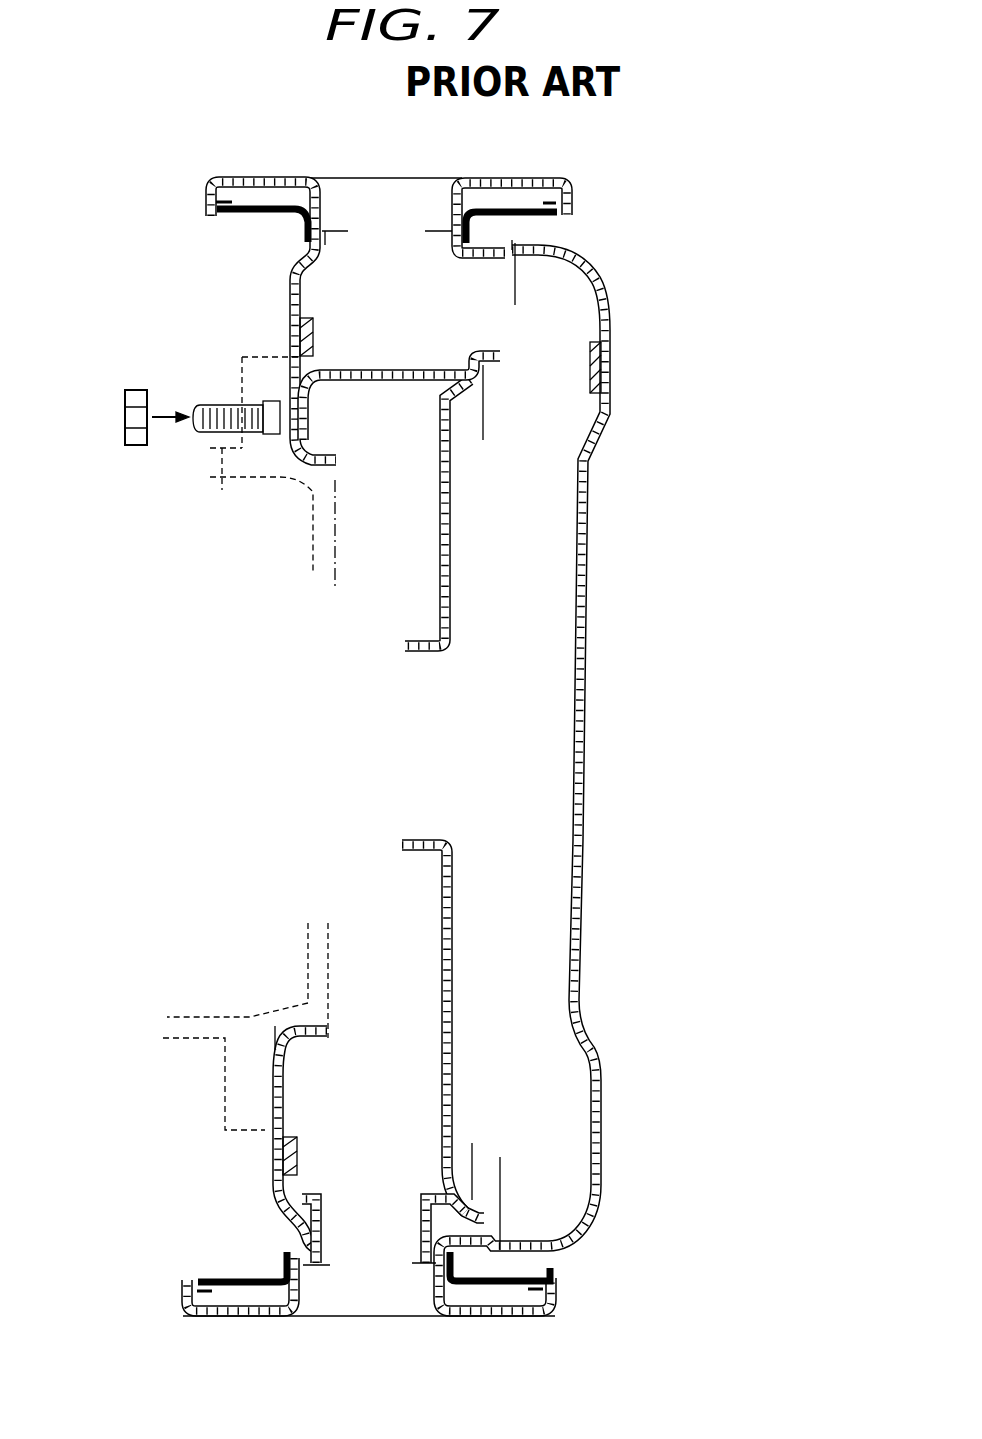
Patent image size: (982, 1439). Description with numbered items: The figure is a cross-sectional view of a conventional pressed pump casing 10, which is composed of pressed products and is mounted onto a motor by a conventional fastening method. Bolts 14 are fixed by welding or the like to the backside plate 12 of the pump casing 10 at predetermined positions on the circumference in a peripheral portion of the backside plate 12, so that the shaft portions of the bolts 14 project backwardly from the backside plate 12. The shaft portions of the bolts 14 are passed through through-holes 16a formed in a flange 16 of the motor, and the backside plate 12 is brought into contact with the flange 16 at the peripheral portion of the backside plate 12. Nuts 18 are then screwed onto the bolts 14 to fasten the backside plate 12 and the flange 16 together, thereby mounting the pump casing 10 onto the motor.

The pump casing 10 is at (646, 236).
The backside plate 12 is at (291, 294).
The bolt 14 is at (316, 421).
The flange 16 is at (313, 573).
The through-hole 16a is at (222, 488).
The nut 18 is at (137, 388).